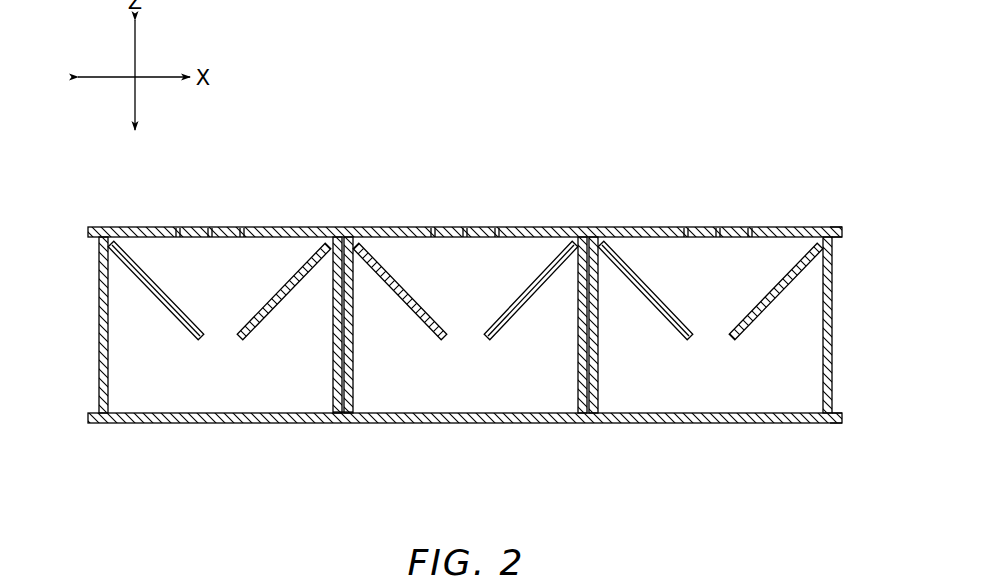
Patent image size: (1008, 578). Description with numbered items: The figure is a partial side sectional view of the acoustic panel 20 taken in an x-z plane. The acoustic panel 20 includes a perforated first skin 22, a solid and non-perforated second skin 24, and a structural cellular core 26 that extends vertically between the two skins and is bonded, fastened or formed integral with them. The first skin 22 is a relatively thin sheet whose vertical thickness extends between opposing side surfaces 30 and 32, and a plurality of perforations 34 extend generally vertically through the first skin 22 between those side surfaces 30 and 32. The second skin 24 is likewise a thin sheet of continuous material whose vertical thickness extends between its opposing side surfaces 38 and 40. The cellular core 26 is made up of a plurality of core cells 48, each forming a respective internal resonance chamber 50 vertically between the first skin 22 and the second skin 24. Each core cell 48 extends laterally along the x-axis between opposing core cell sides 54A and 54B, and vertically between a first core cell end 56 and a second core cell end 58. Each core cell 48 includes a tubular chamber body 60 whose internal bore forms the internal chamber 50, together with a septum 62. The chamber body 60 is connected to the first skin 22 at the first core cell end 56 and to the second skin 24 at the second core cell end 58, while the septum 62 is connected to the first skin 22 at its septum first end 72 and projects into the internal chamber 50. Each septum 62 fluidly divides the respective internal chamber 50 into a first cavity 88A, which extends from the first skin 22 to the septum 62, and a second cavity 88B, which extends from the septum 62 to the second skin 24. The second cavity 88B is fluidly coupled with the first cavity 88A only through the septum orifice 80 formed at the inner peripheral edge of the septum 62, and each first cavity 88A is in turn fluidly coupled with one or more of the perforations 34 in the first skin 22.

The acoustic panel 20 is at (652, 163).
The first skin 22 is at (83, 231).
The second skin 24 is at (83, 424).
The cellular core 26 is at (68, 237).
The first skin side surface 30 is at (836, 227).
The first skin side surface 32 is at (842, 238).
The first skin perforations 34 is at (242, 228).
The second skin side surface 38 is at (840, 424).
The second skin side surface 40 is at (834, 411).
The core cells 48 is at (580, 311).
The internal chambers 50 is at (198, 396).
The core cell side 54A is at (336, 352).
The core cell side 54B is at (600, 323).
The first core cell end 56 is at (440, 279).
The septum first end 72 is at (582, 325).
The second core cell end 58 is at (338, 424).
The chamber body 60 is at (346, 330).
The septum 62 is at (288, 289).
The septum orifice 80 is at (220, 356).
The first cavity 88A is at (215, 283).
The second cavity 88B is at (158, 370).